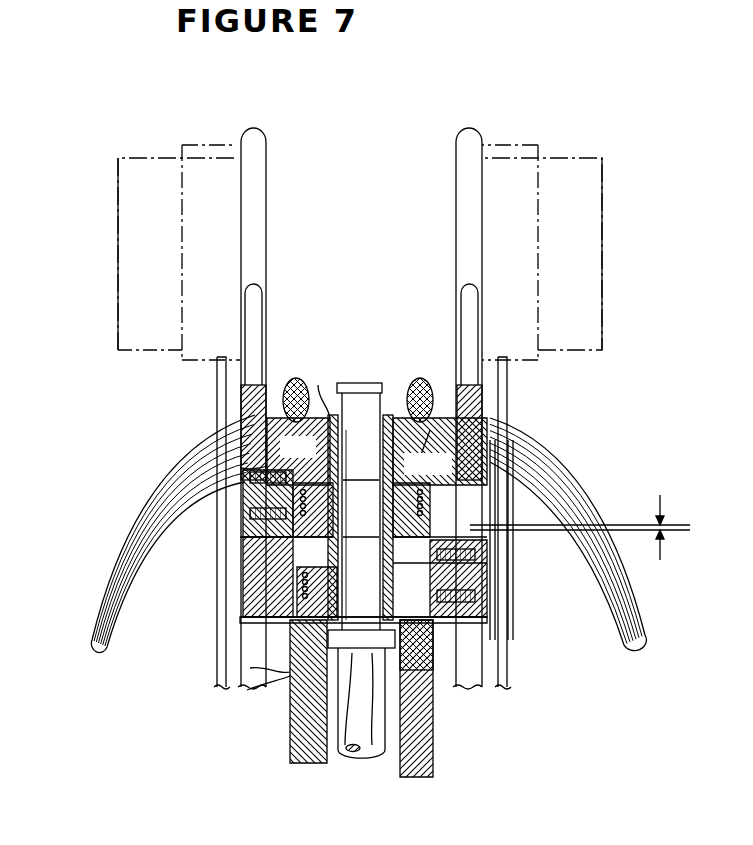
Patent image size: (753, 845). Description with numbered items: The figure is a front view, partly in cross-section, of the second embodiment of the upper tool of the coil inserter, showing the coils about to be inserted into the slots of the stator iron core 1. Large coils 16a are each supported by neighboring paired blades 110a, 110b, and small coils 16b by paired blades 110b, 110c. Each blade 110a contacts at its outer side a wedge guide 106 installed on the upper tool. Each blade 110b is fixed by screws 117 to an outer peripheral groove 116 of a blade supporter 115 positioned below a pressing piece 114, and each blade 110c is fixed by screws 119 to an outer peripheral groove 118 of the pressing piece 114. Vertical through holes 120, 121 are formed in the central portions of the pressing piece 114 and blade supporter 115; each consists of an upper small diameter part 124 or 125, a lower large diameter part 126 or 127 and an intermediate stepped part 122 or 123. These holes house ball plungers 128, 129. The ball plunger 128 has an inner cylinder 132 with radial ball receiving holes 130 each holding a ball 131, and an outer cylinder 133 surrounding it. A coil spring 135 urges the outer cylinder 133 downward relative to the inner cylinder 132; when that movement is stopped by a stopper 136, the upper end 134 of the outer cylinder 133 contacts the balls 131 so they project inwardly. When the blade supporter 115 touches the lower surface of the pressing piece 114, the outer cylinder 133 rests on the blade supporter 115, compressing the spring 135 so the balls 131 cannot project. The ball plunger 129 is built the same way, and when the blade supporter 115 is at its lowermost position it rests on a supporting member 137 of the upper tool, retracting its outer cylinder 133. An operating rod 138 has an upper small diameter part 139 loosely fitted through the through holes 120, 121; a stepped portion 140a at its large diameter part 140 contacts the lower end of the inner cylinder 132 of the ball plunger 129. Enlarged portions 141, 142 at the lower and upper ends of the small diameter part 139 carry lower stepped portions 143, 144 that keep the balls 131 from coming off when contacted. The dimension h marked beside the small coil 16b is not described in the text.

The stator iron core 1 is at (118, 188).
The wedge guide 106 is at (217, 378).
The blade 110a is at (263, 162).
The blade 110b is at (461, 300).
The blade 110c is at (262, 300).
The large coil 16a is at (292, 378).
The small coil 16b is at (108, 556).
The enlarged portion 142 is at (341, 383).
The upper small diameter part 139 is at (350, 418).
The enlarged portion 141 is at (344, 560).
The vertical through hole 120 is at (333, 415).
The upper small diameter part 124 is at (388, 415).
The lower stepped portion 144 is at (318, 385).
The pressing piece 114 is at (430, 430).
The upper end of the outer cylinder 134 is at (382, 575).
The ball plunger 128 is at (396, 465).
The ball receiving hole 130 is at (333, 512).
The outer cylinder 133 is at (250, 575).
The intermediate stepped part 123 is at (255, 597).
The blade supporter 115 is at (250, 546).
The outer peripheral groove 118 is at (250, 477).
The screw 119 is at (250, 513).
The ball 131 is at (287, 462).
The intermediate stepped part 122 is at (240, 468).
The stopper 136 is at (260, 628).
The supporting member 137 is at (250, 668).
The ball plunger 129 is at (247, 690).
The vertical through hole 121 is at (416, 522).
The coil spring 135 is at (490, 482).
The outer peripheral groove 116 is at (450, 578).
The upper small diameter part 125 is at (475, 555).
The screw 117 is at (476, 596).
The lower large diameter part 127 is at (470, 638).
The inner cylinder 132 is at (505, 440).
The lower large diameter part 126 is at (532, 478).
The height offset h is at (580, 531).
The operating rod 138 is at (323, 707).
The large diameter part 140 is at (337, 693).
The stepped portion 140a is at (338, 750).
The lower stepped portion 143 is at (373, 700).